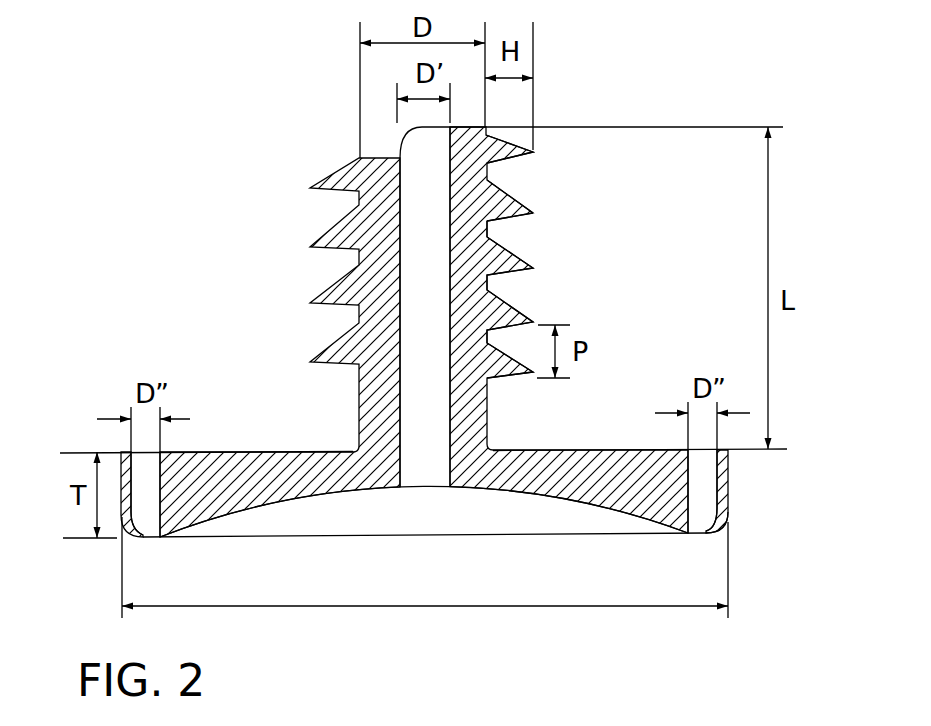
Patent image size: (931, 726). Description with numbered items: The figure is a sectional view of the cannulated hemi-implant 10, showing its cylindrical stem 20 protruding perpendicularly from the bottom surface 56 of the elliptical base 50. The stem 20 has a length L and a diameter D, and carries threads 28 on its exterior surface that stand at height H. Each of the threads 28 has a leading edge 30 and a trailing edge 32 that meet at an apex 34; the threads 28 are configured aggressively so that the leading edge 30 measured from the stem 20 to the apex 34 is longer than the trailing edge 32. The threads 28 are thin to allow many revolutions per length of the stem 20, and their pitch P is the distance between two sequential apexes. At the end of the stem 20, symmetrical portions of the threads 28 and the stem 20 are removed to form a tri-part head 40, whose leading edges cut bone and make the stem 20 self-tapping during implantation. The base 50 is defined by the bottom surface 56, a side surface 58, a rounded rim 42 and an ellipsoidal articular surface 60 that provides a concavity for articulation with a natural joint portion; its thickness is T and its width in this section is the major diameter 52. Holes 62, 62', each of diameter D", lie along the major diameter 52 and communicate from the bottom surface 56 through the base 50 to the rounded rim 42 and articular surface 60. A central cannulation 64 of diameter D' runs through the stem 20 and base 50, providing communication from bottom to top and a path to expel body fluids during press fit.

The implant 10 is at (287, 170).
The tri-part head 40 is at (452, 126).
The threads 28 is at (513, 153).
The leading edge 30 is at (515, 200).
The apex 34 is at (514, 215).
The trailing edge 32 is at (492, 225).
The stem 20 is at (490, 282).
The base 50 is at (317, 452).
The bottom surface 56 is at (597, 450).
The hole 62 is at (192, 476).
The hole 62' is at (752, 491).
The side surface 58 is at (730, 483).
The rounded rim 42 is at (723, 522).
The ellipsoidal articular surface 60 is at (620, 510).
The cannulation 64 is at (435, 482).
The major diameter 52 is at (365, 607).